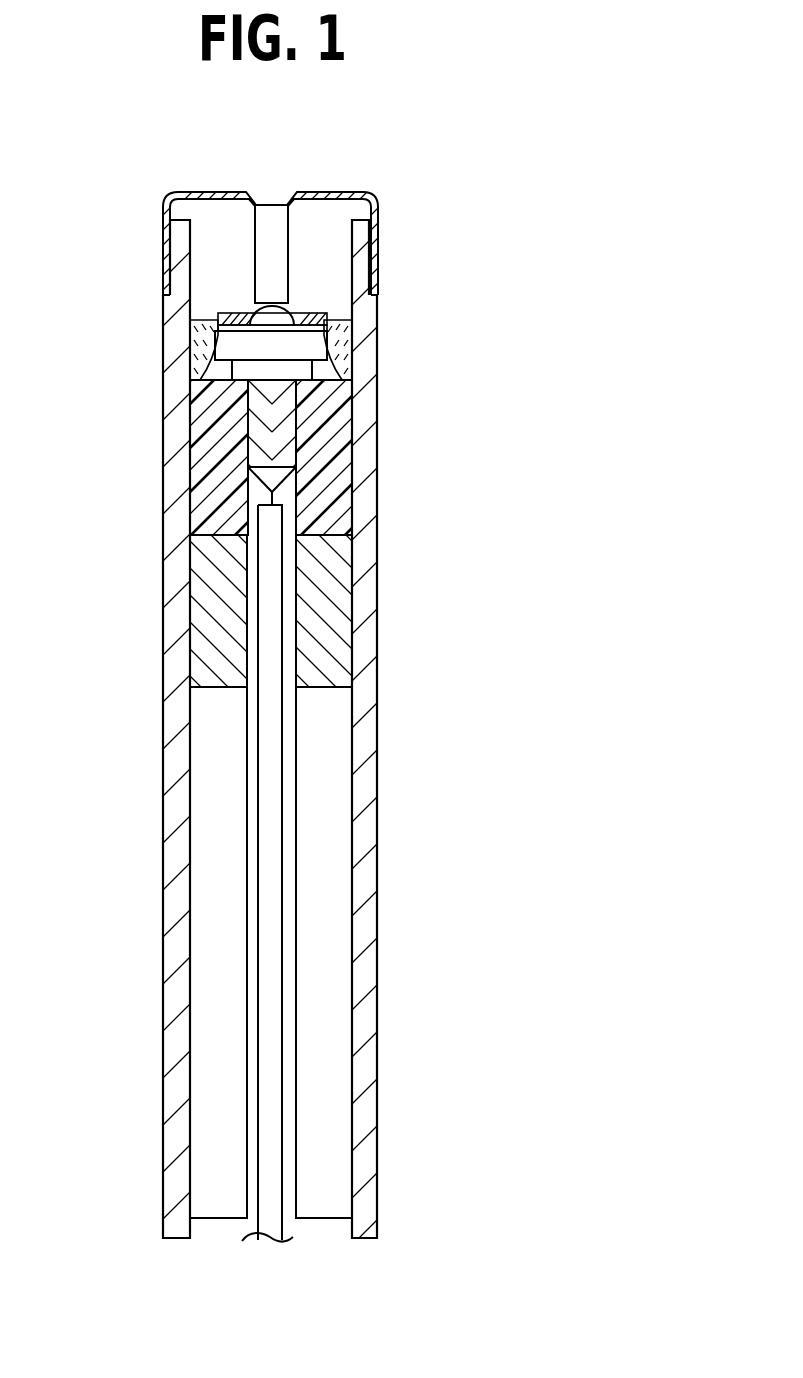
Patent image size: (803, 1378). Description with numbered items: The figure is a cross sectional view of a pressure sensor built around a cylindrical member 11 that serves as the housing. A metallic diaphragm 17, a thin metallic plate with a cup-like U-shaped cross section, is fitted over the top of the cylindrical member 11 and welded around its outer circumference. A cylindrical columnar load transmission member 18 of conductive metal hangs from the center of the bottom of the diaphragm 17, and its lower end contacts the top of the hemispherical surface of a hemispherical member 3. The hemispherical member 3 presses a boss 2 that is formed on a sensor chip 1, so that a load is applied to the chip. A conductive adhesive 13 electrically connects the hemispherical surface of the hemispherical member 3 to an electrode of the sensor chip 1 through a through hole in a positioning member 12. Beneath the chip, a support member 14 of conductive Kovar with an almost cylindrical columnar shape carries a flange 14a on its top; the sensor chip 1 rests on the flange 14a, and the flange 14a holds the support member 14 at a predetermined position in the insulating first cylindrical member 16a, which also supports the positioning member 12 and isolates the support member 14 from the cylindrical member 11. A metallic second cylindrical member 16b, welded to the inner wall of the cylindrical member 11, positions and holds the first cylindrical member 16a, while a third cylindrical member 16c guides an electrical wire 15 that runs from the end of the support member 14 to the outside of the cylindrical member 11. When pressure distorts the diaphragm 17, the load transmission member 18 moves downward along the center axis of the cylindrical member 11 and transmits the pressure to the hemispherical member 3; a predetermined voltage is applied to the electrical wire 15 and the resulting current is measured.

The sensor chip 1 is at (316, 354).
The boss 2 is at (290, 330).
The hemispherical member 3 is at (288, 307).
The cylindrical member 11 is at (172, 620).
The positioning member 12 is at (195, 352).
The conductive adhesive 13 is at (222, 315).
The support member 14 is at (272, 432).
The flange 14a is at (247, 413).
The electrical wire 15 is at (268, 1031).
The first cylindrical member 16a is at (332, 487).
The second cylindrical member 16b is at (332, 612).
The third cylindrical member 16c is at (325, 819).
The metallic diaphragm 17 is at (376, 199).
The load transmission member 18 is at (253, 246).